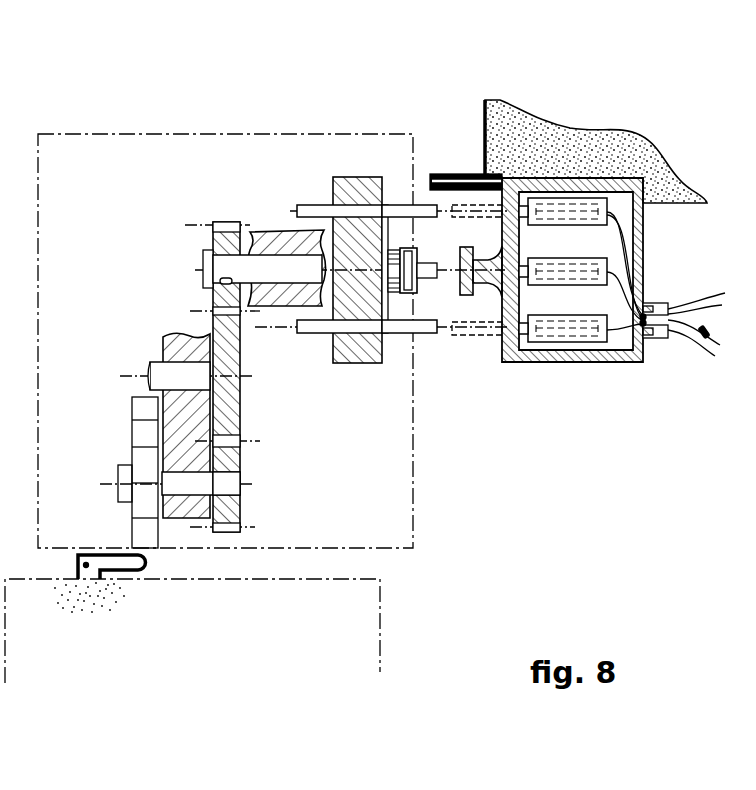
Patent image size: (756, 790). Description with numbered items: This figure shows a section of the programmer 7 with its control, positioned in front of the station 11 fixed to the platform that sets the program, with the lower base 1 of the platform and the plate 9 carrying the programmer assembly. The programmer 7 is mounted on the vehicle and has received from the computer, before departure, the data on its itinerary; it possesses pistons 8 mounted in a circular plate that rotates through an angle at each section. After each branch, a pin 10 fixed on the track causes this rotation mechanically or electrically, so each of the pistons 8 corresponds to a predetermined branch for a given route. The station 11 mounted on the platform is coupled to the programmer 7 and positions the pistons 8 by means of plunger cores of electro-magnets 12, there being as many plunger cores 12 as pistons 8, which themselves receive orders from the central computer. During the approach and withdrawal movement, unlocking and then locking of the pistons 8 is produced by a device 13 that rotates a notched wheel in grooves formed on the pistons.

The base 1 is at (40, 578).
The programmer 7 is at (283, 131).
The pistons 8 is at (426, 208).
The mounting plate 9 is at (340, 177).
The pin 10 is at (78, 555).
The station 11 is at (532, 362).
The plunger cores of electro-magnets 12 is at (595, 340).
The locking device 13 is at (414, 264).